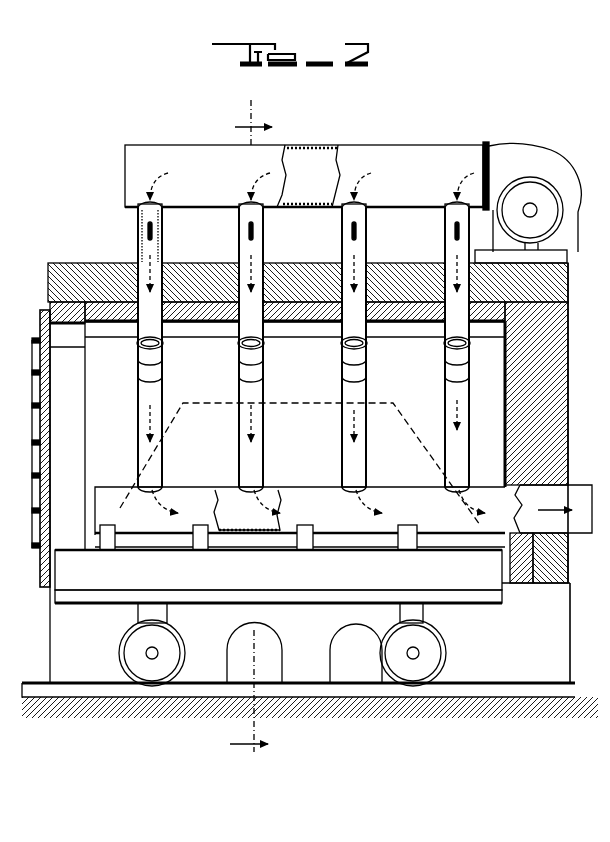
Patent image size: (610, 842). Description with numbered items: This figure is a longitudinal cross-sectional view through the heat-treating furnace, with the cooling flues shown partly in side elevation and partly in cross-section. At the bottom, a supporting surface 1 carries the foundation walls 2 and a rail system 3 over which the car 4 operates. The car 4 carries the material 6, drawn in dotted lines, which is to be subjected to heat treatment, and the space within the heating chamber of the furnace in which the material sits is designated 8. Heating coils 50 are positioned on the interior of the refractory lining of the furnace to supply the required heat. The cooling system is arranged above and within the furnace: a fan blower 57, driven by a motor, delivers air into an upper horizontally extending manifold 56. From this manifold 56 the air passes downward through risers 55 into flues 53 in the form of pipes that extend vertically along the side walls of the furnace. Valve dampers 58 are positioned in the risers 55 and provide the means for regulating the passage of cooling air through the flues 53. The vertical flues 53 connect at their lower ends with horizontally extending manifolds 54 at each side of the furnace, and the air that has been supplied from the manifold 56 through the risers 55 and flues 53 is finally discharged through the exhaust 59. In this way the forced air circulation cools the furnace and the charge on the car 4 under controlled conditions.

The supporting surface 1 is at (112, 735).
The foundation walls 2 is at (344, 634).
The rail system 3 is at (100, 693).
The car 4 is at (280, 600).
The material 6 is at (300, 464).
The heating chamber space 8 is at (497, 330).
The heating coils 50 is at (507, 375).
The flues 53 is at (141, 432).
The manifolds 54 is at (345, 530).
The risers 55 is at (150, 263).
The upper manifold 56 is at (405, 152).
The fan blower 57 is at (553, 177).
The valve dampers 58 is at (138, 233).
The exhaust 59 is at (553, 509).